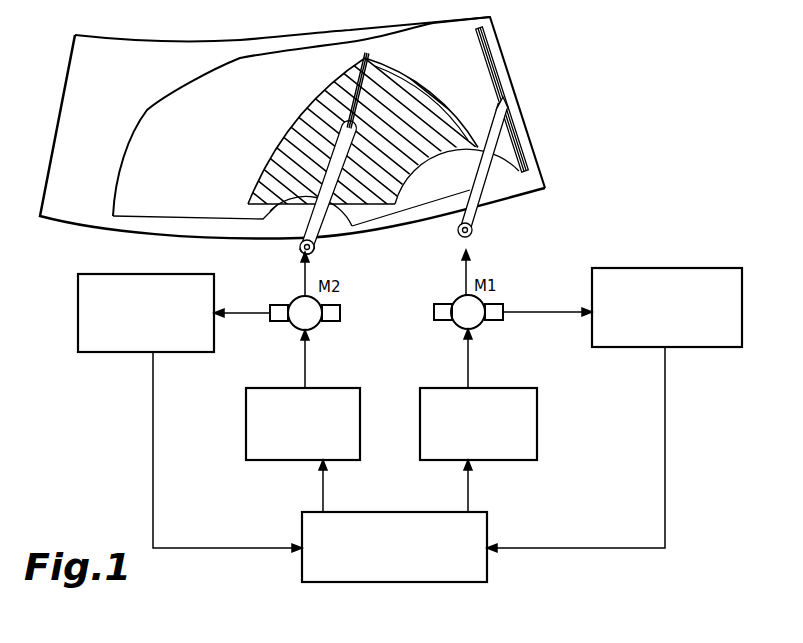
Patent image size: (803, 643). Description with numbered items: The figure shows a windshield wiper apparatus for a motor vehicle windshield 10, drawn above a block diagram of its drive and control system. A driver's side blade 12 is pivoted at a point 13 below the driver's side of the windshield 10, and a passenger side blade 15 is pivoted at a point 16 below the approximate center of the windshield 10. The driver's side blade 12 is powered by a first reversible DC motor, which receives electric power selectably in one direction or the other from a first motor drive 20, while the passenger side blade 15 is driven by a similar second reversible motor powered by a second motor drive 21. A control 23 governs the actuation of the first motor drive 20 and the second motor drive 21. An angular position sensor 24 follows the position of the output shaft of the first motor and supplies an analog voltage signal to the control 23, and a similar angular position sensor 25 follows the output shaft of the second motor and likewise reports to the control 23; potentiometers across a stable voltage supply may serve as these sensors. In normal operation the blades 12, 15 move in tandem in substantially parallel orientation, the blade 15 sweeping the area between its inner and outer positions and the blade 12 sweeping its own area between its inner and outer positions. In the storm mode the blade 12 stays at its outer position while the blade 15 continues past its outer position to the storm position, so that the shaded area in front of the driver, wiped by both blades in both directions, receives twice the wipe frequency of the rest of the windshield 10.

The windshield 10 is at (138, 58).
The driver's side blade 12 is at (493, 75).
The pivot point 13 is at (474, 231).
The passenger side blade 15 is at (388, 42).
The pivot point 16 is at (295, 252).
The motor 1 drive 20 is at (538, 418).
The motor 2 drive 21 is at (242, 430).
The control 23 is at (343, 585).
The angular position sensor 24 is at (685, 347).
The angular position sensor 25 is at (120, 353).